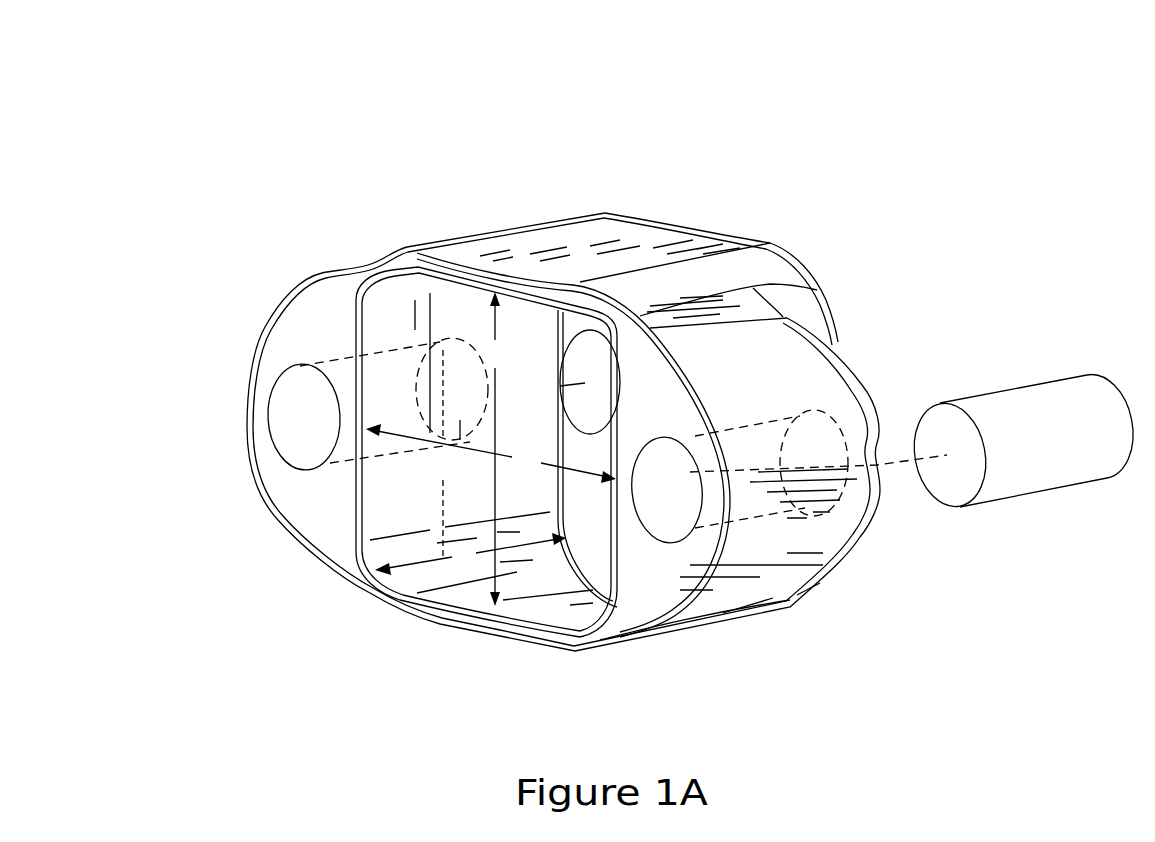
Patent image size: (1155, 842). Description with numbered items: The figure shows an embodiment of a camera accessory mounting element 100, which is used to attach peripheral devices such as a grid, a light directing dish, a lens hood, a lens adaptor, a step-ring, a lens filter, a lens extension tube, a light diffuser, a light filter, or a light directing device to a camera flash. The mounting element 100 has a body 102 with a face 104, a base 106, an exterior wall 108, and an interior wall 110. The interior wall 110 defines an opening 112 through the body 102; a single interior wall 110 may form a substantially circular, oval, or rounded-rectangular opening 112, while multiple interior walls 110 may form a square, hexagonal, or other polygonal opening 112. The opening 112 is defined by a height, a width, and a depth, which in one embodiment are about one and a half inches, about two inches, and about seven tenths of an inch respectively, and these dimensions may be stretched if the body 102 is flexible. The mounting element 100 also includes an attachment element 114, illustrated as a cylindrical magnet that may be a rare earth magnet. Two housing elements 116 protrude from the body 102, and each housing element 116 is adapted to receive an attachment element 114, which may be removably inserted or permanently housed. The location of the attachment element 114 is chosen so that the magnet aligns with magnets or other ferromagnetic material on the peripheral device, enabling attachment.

The camera accessory mounting element 100 is at (851, 80).
The body 102 is at (464, 180).
The face 104 is at (186, 410).
The base 106 is at (937, 333).
The exterior wall 108 is at (619, 233).
The interior wall 110 is at (378, 506).
The opening 112 is at (474, 491).
The attachment element 114 is at (600, 370).
The housing element 116 is at (272, 462).